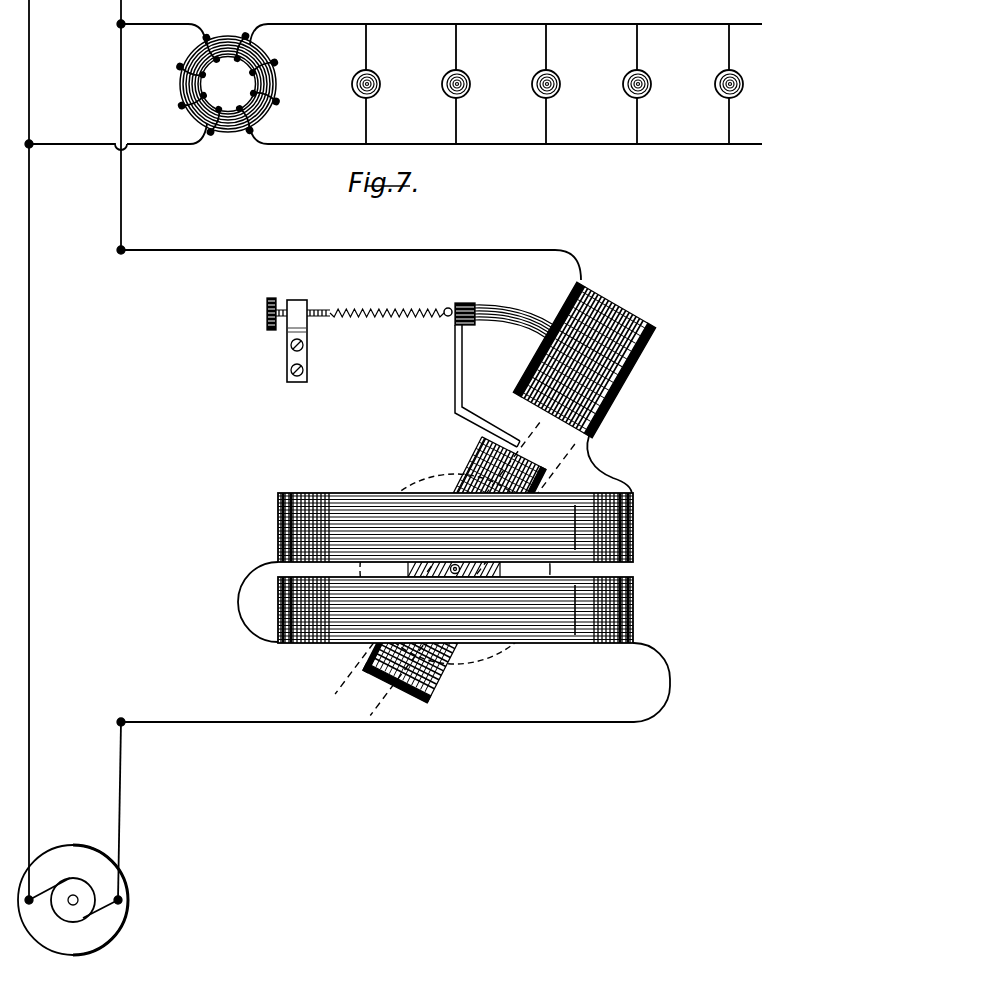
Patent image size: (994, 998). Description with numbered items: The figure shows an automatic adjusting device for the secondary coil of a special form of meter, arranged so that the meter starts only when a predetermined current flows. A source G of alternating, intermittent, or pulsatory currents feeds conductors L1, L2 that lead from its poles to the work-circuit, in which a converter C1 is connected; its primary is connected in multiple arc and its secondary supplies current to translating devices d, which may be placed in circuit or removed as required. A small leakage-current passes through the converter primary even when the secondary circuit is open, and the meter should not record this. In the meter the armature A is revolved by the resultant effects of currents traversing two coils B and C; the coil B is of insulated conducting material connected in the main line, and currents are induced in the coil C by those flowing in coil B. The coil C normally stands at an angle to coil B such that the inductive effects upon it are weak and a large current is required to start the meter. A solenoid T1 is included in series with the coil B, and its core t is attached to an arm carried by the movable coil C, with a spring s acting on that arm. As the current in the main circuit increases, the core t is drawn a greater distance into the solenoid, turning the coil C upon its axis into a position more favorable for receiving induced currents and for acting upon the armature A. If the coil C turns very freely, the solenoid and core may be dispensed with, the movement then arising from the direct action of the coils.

The converter C1 is at (228, 84).
The translating devices d is at (555, 84).
The solenoid T1 is at (592, 292).
The spring s is at (359, 340).
The core t is at (503, 375).
The armature A is at (443, 475).
The coil C is at (548, 477).
The coil B is at (633, 606).
The conductor L2 is at (40, 450).
The conductor L1 is at (131, 811).
The source of electric currents G is at (86, 900).